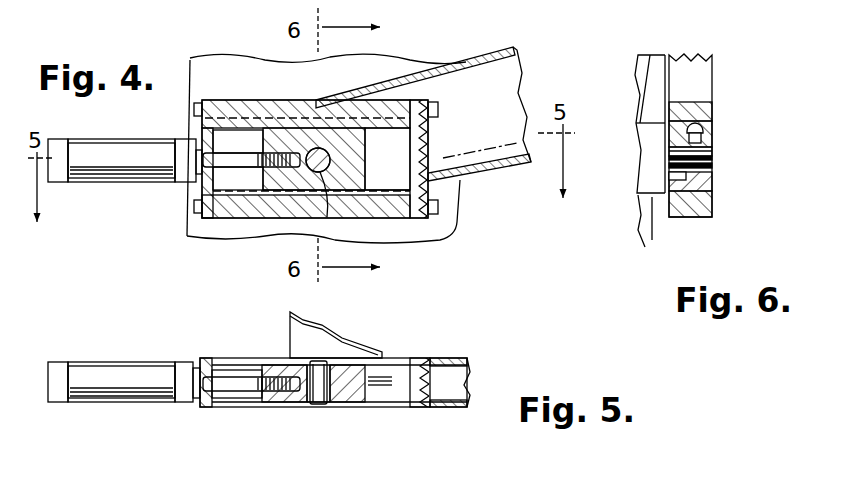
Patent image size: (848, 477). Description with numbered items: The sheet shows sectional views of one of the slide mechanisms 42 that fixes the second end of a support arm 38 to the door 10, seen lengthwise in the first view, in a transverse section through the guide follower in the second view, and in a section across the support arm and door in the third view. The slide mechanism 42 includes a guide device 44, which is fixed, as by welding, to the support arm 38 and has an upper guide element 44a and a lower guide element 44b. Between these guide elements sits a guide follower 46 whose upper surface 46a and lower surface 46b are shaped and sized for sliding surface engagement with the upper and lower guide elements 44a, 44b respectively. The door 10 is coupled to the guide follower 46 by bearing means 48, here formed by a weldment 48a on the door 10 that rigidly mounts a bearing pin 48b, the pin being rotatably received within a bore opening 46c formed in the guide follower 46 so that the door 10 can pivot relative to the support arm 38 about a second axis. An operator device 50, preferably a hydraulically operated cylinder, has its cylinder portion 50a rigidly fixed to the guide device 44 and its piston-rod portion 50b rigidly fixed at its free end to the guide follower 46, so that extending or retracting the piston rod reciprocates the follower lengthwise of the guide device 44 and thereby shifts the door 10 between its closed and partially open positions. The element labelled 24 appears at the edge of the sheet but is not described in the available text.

In FIG. 4, the door 10 is at (190, 58).
In FIG. 6, the door 10 is at (652, 242).
In FIG. 6, the support member 24 is at (750, 1).
In FIG. 4, the support arm 38 is at (483, 56).
In FIG. 6, the support arm 38 is at (694, 56).
In FIG. 5, the support arm 38 is at (455, 359).
In FIG. 4, the slide mechanism 42 is at (215, 232).
In FIG. 6, the slide mechanism 42 is at (725, 83).
In FIG. 5, the slide mechanism 42 is at (230, 410).
In FIG. 4, the guide device 44 is at (341, 146).
In FIG. 5, the guide device 44 is at (333, 377).
In FIG. 4, the upper guide element 44a is at (430, 80).
In FIG. 6, the upper guide element 44a is at (712, 107).
In FIG. 4, the lower guide element 44b is at (400, 240).
In FIG. 6, the lower guide element 44b is at (712, 212).
In FIG. 5, the lower guide element 44b is at (385, 403).
In FIG. 4, the guide follower 46 is at (353, 138).
In FIG. 6, the guide follower 46 is at (716, 140).
In FIG. 5, the guide follower 46 is at (356, 384).
In FIG. 4, the upper surface 46a is at (384, 152).
In FIG. 6, the upper surface 46a is at (712, 123).
In FIG. 4, the lower surface 46b is at (355, 201).
In FIG. 6, the lower surface 46b is at (712, 187).
In FIG. 6, the bore opening 46c is at (712, 152).
In FIG. 5, the bore opening 46c is at (318, 359).
In FIG. 6, the bearing means 48 is at (627, 139).
In FIG. 5, the bearing means 48 is at (309, 320).
In FIG. 6, the weldment 48a is at (636, 146).
In FIG. 5, the weldment 48a is at (336, 343).
In FIG. 4, the bearing pin 48b is at (326, 196).
In FIG. 6, the bearing pin 48b is at (712, 164).
In FIG. 5, the bearing pin 48b is at (318, 403).
In FIG. 4, the operator device 50 is at (174, 169).
In FIG. 5, the operator device 50 is at (174, 345).
In FIG. 4, the cylinder portion 50a is at (90, 143).
In FIG. 5, the cylinder portion 50a is at (95, 366).
In FIG. 4, the piston-rod portion 50b is at (222, 170).
In FIG. 5, the piston-rod portion 50b is at (218, 378).